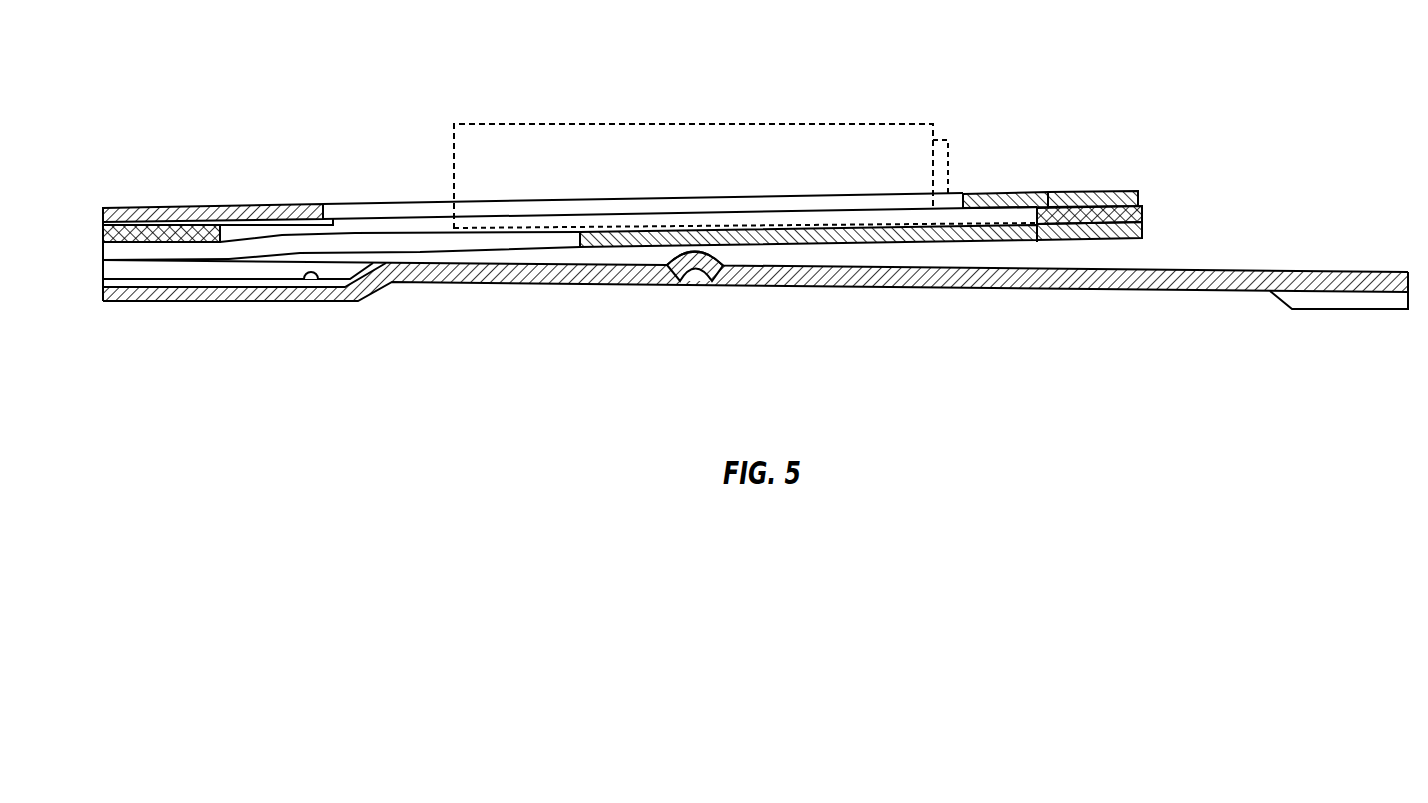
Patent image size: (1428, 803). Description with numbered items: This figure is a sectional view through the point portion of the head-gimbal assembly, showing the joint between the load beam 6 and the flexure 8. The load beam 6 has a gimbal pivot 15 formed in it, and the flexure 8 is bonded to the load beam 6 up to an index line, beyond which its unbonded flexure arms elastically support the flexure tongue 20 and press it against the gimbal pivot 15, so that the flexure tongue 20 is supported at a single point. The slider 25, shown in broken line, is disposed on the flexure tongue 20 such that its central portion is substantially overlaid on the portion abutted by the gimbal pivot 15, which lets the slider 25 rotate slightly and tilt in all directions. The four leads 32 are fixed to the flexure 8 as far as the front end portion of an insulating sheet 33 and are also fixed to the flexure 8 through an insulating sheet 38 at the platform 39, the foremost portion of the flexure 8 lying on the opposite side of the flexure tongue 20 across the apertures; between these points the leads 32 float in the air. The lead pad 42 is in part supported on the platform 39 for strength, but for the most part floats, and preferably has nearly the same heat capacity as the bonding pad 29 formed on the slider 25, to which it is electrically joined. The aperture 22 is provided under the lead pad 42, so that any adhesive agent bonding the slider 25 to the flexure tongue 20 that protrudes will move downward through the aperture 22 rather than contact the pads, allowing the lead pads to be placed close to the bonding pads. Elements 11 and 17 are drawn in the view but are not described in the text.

The load beam 6 is at (457, 281).
The flexure 8 is at (230, 258).
The dimple 11 is at (310, 281).
The gimbal pivot 15 is at (701, 249).
The end portion 17 is at (1341, 300).
The flexure tongue 20 is at (763, 233).
The aperture 22 is at (1037, 242).
The slider 25 is at (690, 143).
The bonding pad 29 is at (945, 148).
The leads 32 is at (283, 207).
The insulating sheet 33 is at (160, 208).
The insulating sheet 38 is at (1145, 213).
The platform 39 is at (1143, 228).
The lead pad 42 is at (1012, 193).